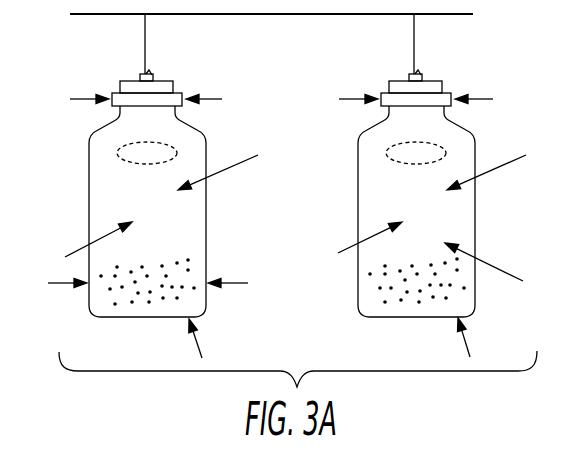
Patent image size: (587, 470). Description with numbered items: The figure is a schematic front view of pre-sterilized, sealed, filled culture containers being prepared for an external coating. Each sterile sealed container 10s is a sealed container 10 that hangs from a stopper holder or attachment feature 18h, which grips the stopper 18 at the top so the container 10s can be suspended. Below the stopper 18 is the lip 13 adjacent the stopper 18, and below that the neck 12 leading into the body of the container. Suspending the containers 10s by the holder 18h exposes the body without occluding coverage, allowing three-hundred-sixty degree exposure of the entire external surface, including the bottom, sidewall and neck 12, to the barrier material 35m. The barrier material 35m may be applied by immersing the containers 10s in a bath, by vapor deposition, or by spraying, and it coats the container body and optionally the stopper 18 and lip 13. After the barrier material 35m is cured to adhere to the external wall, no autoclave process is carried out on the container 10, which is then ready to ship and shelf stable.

The container 10 is at (463, 58).
The sterile sealed container 10s is at (190, 218).
The neck 12 is at (119, 112).
The lip 13 is at (183, 106).
The stopper 18 is at (162, 86).
The stopper holder or attachment feature 18h is at (140, 78).
The barrier material 35m is at (86, 247).